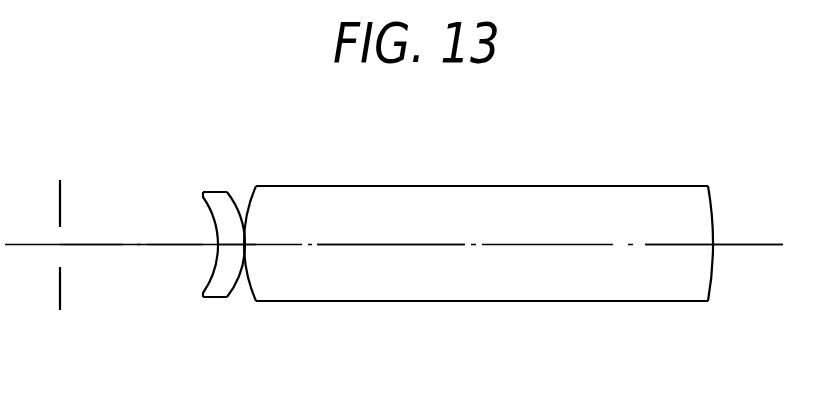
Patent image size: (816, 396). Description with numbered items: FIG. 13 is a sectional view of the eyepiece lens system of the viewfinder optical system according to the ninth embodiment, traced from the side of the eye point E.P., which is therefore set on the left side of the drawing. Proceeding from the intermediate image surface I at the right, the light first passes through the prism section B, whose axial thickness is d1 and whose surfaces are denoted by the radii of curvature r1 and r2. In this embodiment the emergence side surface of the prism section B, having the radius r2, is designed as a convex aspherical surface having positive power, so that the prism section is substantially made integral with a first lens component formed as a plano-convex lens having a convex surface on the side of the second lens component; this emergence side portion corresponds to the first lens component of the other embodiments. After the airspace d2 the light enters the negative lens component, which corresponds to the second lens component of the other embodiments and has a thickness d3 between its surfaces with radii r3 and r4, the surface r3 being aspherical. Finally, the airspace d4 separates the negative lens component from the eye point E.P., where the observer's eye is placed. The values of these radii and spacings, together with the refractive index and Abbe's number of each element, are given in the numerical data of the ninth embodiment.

The radius of curvature of the first surface r1 is at (712, 202).
The radius of curvature of the second surface r2 is at (246, 203).
The radius of curvature of the third surface r3 is at (233, 193).
The radius of curvature of the fourth surface r4 is at (205, 214).
The thickness of the prism section d1 is at (419, 247).
The airspace between prism section and negative lens component d2 is at (245, 248).
The thickness of the negative lens component d3 is at (231, 247).
The airspace to the eye point d4 is at (118, 247).
The prism section B is at (500, 244).
The intermediate image surface I is at (713, 247).
The eye point E.P. is at (65, 264).